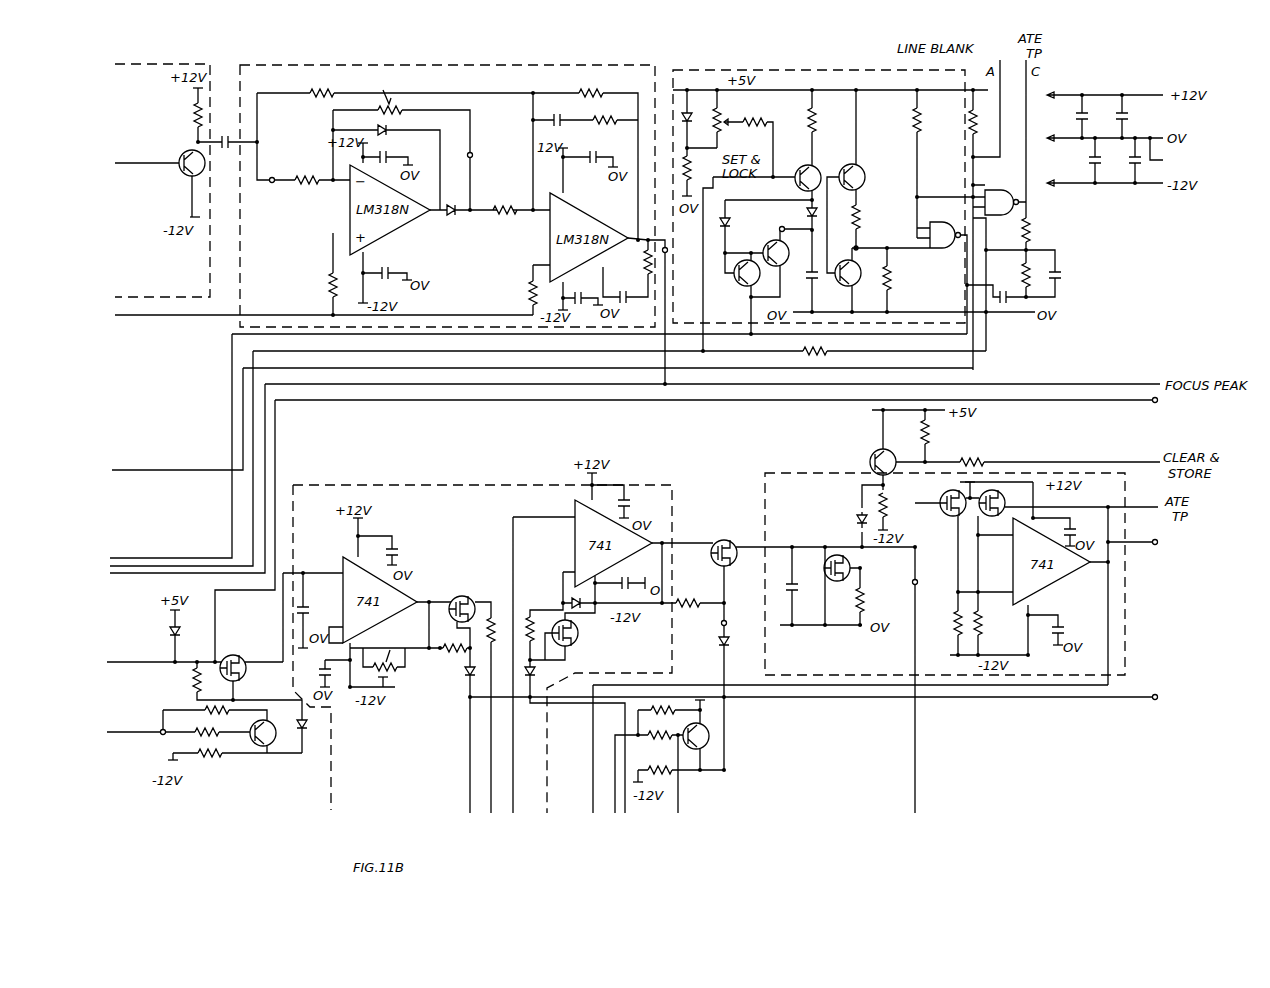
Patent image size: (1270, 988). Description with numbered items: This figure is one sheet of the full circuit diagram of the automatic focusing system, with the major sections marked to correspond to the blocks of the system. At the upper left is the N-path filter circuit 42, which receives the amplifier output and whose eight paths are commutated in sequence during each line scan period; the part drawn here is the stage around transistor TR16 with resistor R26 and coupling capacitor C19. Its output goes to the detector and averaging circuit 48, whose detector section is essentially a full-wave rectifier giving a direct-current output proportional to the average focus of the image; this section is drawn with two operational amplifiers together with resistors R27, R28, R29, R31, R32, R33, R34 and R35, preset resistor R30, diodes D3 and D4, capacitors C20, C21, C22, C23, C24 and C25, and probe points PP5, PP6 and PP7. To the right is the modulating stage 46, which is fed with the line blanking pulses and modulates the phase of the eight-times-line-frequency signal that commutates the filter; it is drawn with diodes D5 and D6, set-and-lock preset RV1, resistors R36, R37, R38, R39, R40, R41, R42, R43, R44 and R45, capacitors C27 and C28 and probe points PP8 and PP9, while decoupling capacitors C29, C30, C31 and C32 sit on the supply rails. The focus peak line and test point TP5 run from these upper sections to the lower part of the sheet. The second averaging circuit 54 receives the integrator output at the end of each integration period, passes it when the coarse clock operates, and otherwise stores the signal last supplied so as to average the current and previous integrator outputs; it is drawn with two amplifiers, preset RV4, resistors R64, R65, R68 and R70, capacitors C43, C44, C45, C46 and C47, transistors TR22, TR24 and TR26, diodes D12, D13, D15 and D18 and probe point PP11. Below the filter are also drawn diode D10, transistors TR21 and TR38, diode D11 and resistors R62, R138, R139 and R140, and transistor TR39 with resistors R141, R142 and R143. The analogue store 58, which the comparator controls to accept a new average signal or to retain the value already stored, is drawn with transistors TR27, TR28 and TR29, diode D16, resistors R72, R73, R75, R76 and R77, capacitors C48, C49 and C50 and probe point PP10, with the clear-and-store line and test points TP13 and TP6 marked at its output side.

The N-path filter circuit 42 is at (137, 64).
The detector and averaging circuit 48 is at (462, 65).
The modulating stage 46 is at (818, 54).
The second averaging circuit 54 is at (458, 485).
The analogue store 58 is at (792, 470).
The resistor R26 is at (181, 115).
The capacitor C19 is at (226, 133).
The transistor TR16 is at (176, 161).
The resistor R27 is at (321, 85).
The potentiometer R30 is at (396, 93).
The diode D3 is at (373, 124).
The capacitor C20 is at (397, 150).
The resistor R28 is at (309, 172).
The test point PP5 is at (270, 191).
The resistor R29 is at (317, 285).
The capacitor C21 is at (387, 265).
The test point PP6 is at (485, 155).
The diode D4 is at (450, 201).
The resistor R31 is at (503, 201).
The resistor R33 is at (590, 85).
The capacitor C22 is at (558, 113).
The resistor R34 is at (605, 127).
The capacitor C23 is at (590, 167).
The resistor R35 is at (632, 262).
The capacitor C25 is at (623, 289).
The resistor R32 is at (517, 293).
The capacitor C24 is at (579, 289).
The test point PP7 is at (679, 252).
The diode D5 is at (717, 162).
The potentiometer RV1 set and lock RV1 is at (730, 130).
The resistor R37 is at (757, 114).
The resistor R36 is at (699, 169).
The resistor R38 is at (827, 119).
The diode D6 is at (801, 213).
The test point PP8 is at (767, 223).
The capacitor C28 is at (948, 281).
The resistor R39 is at (871, 216).
The test point PP9 is at (868, 241).
The resistor R41 is at (902, 278).
The resistor R42 is at (932, 117).
The resistor R43 is at (957, 122).
The resistor R40 is at (812, 346).
The capacitor C27 is at (974, 292).
The resistor R44 is at (1041, 230).
The resistor R45 is at (1010, 275).
The capacitor C29 is at (1094, 111).
The capacitor C30 is at (1134, 111).
The capacitor C31 is at (1083, 166).
The capacitor C32 is at (1123, 166).
The test point TP5 is at (1171, 401).
The test point TP13 is at (1175, 543).
The test point TP6 is at (1171, 698).
The capacitor C45 is at (406, 552).
The capacitor C43 is at (315, 605).
The potentiometer RV4 is at (385, 650).
The capacitor C44 is at (314, 669).
The resistor R64 is at (448, 651).
The transistor TR22 is at (456, 601).
The resistor R65 is at (492, 616).
The diode D12 is at (468, 690).
The diode D13 is at (545, 672).
The resistor R68 is at (528, 622).
The diode D18 is at (572, 600).
The transistor TR24 is at (585, 635).
The capacitor C46 is at (638, 504).
The capacitor C47 is at (633, 575).
The resistor R70 is at (691, 596).
The transistor TR26 is at (719, 547).
The test point PP11 is at (708, 627).
The diode D15 is at (740, 642).
The diode D10 is at (190, 632).
The transistor TR21 is at (238, 662).
The resistor R62 is at (182, 680).
The resistor R138 is at (188, 703).
The resistor R139 is at (190, 725).
The diode D11 is at (317, 726).
The resistor R140 is at (215, 765).
The transistor TR38 is at (271, 750).
The resistor R142 is at (668, 705).
The resistor R141 is at (655, 745).
The resistor R143 is at (671, 775).
The transistor TR39 is at (711, 742).
The transistor TR29 is at (867, 457).
The resistor R72 is at (940, 432).
The resistor R73 is at (973, 456).
The resistor R76 is at (920, 568).
The diode D16 is at (846, 519).
The transistor TR28 is at (825, 569).
The capacitor C48 is at (775, 587).
The resistor R75 is at (875, 600).
The test point PP10 is at (933, 584).
The dual transistor TR27 is at (955, 500).
The resistor R77 is at (992, 627).
The capacitor C49 is at (1081, 527).
The capacitor C50 is at (1069, 626).